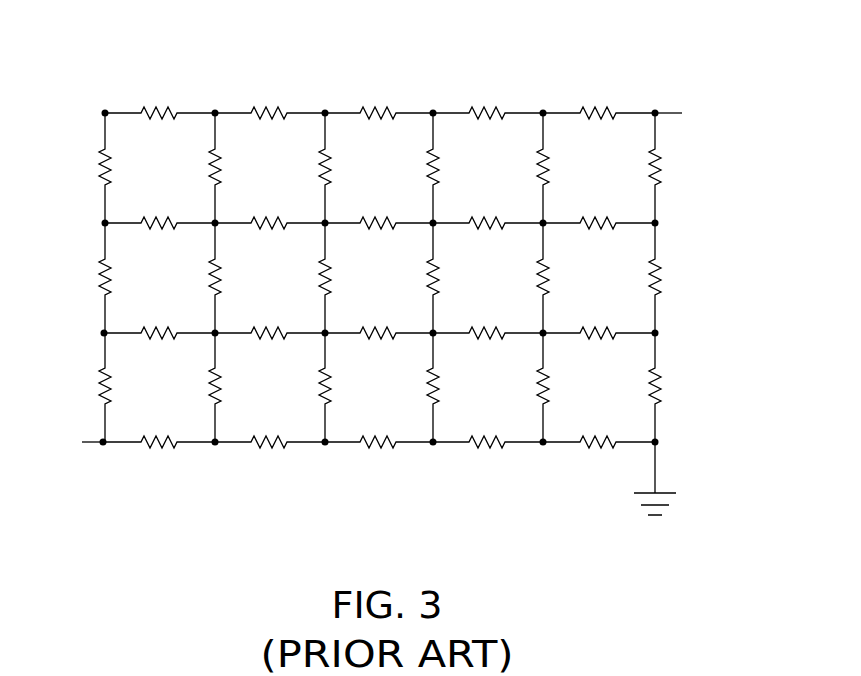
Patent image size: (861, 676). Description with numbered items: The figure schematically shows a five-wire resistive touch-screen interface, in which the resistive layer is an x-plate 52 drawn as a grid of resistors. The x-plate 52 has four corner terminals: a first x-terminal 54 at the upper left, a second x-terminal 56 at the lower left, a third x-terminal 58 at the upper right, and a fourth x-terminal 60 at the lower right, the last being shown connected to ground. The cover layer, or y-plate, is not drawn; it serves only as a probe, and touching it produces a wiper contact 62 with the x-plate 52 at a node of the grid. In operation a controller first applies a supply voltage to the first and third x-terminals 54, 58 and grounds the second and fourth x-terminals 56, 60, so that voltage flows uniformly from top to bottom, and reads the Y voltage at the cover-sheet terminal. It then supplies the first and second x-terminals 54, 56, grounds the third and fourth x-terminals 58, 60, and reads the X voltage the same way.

The x-plate 52 is at (395, 36).
The first x-terminal 54 is at (106, 112).
The second x-terminal 56 is at (90, 441).
The third x-terminal 58 is at (671, 113).
The fourth x-terminal 60 is at (656, 441).
The wiper contact 62 is at (440, 346).